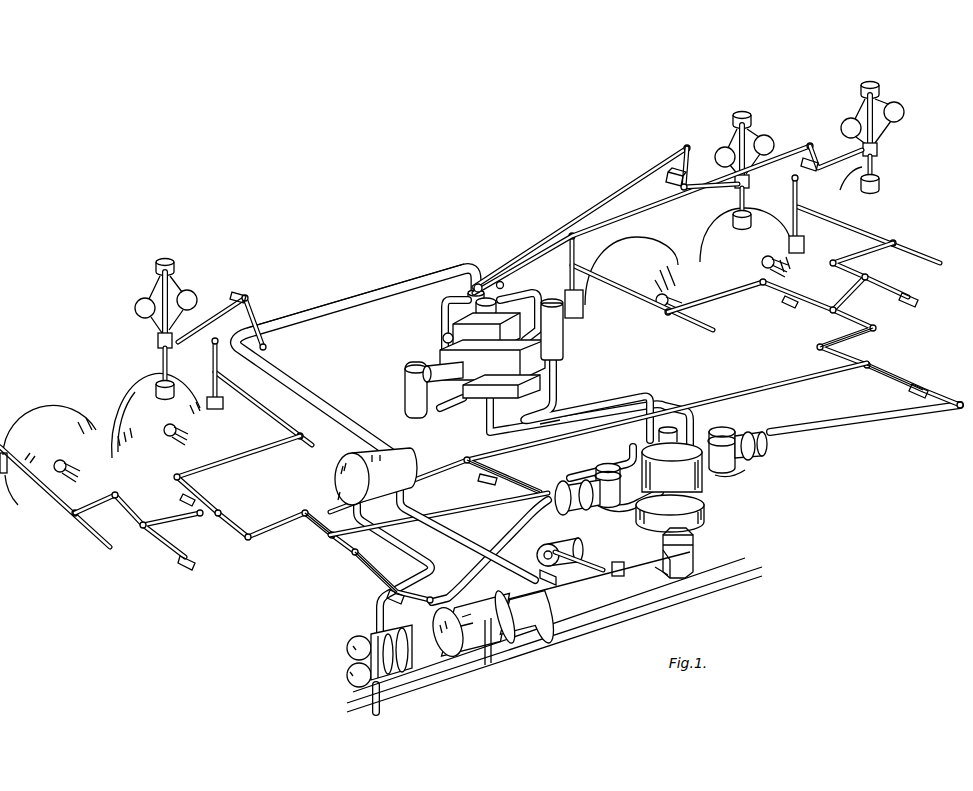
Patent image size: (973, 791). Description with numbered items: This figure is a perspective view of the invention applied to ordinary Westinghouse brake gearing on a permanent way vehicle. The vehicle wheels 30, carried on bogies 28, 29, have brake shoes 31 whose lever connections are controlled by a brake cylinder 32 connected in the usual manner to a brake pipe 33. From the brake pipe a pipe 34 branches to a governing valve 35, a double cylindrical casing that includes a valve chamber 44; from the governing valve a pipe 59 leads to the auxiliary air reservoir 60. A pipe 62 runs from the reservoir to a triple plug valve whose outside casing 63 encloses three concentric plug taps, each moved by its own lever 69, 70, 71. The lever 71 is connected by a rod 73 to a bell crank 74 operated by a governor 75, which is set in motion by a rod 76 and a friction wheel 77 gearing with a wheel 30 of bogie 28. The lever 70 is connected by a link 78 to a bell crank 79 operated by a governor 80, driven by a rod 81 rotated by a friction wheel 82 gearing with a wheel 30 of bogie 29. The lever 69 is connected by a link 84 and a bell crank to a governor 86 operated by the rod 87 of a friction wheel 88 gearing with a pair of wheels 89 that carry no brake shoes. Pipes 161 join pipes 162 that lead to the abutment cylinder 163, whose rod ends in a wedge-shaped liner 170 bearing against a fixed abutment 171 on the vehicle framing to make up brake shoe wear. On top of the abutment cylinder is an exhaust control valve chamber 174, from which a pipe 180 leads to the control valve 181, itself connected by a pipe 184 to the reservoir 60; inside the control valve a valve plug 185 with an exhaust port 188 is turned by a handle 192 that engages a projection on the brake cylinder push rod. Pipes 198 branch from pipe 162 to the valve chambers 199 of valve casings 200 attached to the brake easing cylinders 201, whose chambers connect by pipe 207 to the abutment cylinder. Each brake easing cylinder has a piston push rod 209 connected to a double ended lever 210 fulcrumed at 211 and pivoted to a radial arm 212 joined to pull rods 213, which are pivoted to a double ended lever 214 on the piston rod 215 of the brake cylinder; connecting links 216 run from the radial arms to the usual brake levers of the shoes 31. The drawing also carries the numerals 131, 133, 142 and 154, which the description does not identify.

The bogie 28 is at (121, 434).
The bogie 29 is at (722, 274).
The permanent way vehicle wheels 30 is at (397, 356).
The brake shoes 31 is at (6, 476).
The brake cylinder 32 is at (470, 608).
The brake pipe 33 is at (604, 628).
The pipe 34 is at (368, 697).
The governing valve 35 is at (350, 648).
The valve chamber 44 is at (408, 655).
The pipe 59 is at (424, 556).
The auxiliary air reservoir 60 is at (435, 514).
The pipe 62 is at (380, 288).
The outside casing 63 is at (468, 290).
The lever 69 is at (479, 283).
The lever 70 is at (501, 281).
The lever 71 is at (498, 290).
The rod 73 is at (352, 325).
The bell crank 74 is at (262, 315).
The governor 75 is at (186, 285).
The rod 76 is at (172, 357).
The friction wheel 77 is at (150, 375).
The link 78 is at (655, 178).
The bell crank 79 is at (715, 184).
The governor 80 is at (755, 140).
The rod 81 is at (748, 193).
The friction wheel 82 is at (740, 228).
The link 84 is at (658, 205).
The governor 86 is at (858, 108).
The rod 87 is at (878, 157).
The friction wheel 88 is at (880, 183).
The pair of wheels 89 is at (852, 185).
The valve body 131 is at (443, 337).
The pipe 133 is at (525, 292).
The valve 142 is at (405, 378).
The cylinder 154 is at (455, 380).
The pipes 161 is at (447, 410).
The pipes 162 is at (488, 420).
The abutment cylinder 163 is at (704, 480).
The wedge-shaped liner 170 is at (695, 556).
The fixed abutment 171 is at (698, 540).
The exhaust control valve chamber 174 is at (682, 405).
The pipe 180 is at (705, 510).
The control valve 181 is at (540, 560).
The pipe 184 is at (445, 530).
The valve plug 185 is at (559, 549).
The exhaust port 188 is at (572, 586).
The handle 192 is at (582, 560).
The pipes 198 is at (633, 447).
The valve chambers 199 is at (622, 574).
The valve casings 200 is at (606, 462).
The brake easing cylinders 201 is at (568, 482).
The pipe 207 is at (633, 500).
The piston push rods 209 is at (518, 528).
The double ended lever 210 is at (412, 590).
The fulcrum 211 is at (912, 390).
The radial arm 212 is at (335, 545).
The pull rods 213 is at (460, 488).
The double ended lever 214 is at (512, 480).
The piston rod 215 is at (680, 580).
The connecting links 216 is at (290, 518).